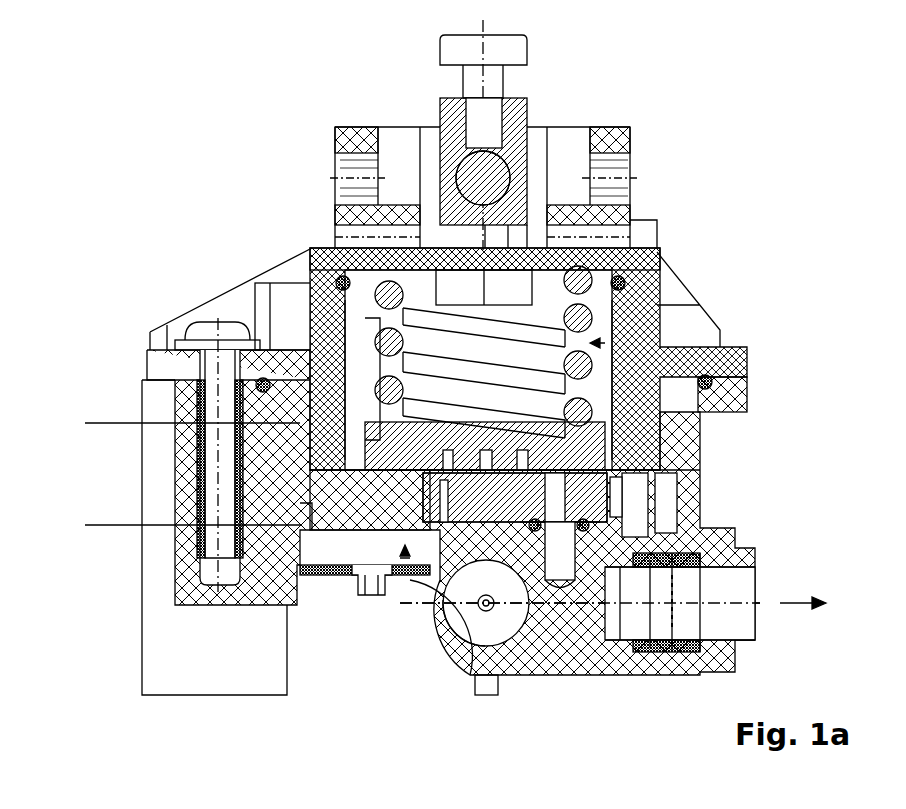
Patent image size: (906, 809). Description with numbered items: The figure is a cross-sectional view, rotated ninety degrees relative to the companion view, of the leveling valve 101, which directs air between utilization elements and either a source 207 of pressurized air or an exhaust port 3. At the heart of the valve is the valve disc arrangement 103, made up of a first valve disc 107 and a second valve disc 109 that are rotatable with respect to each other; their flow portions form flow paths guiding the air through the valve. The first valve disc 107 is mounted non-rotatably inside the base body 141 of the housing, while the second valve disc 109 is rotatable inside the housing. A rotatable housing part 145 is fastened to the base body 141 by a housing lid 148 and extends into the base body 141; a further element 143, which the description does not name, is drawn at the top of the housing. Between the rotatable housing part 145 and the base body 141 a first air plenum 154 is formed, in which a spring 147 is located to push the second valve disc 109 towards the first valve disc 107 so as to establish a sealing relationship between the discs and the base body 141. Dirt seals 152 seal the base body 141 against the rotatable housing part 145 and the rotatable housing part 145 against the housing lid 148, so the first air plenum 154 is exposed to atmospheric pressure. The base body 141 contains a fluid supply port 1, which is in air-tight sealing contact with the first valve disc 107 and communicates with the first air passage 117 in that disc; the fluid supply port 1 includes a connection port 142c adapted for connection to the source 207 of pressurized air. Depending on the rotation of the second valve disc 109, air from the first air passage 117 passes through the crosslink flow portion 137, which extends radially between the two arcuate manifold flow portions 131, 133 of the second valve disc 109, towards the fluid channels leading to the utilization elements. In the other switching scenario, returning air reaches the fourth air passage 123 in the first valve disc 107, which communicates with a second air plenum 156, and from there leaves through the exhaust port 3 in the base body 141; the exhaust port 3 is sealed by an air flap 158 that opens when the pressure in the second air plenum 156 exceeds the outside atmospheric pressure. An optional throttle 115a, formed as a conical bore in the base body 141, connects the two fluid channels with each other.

The leveling valve 101 is at (228, 106).
The adjusting screw 143 is at (495, 195).
The rotatable housing part 145 is at (352, 128).
The spring 147 is at (658, 298).
The housing lid 148 is at (296, 255).
The dirt seal 152 is at (335, 278).
The first air plenum 154 is at (657, 305).
The base body 141 is at (742, 395).
The crosslink flow portion 137 is at (650, 455).
The arcuate manifold flow portion 131 is at (650, 472).
The first air passage 117 is at (640, 500).
The fluid supply port 1 is at (568, 568).
The arcuate manifold flow portion 133 is at (465, 625).
The throttle 115a is at (494, 613).
The fourth air passage 123 is at (440, 540).
The exhaust port 3 is at (393, 576).
The air flap 158 is at (316, 582).
The second air plenum 156 is at (312, 515).
The second valve disc 109 is at (300, 444).
The first valve disc 107 is at (300, 502).
The valve disc arrangement 103 is at (85, 423).
The connection port 142c is at (745, 620).
The source of pressurized air 207 is at (795, 598).